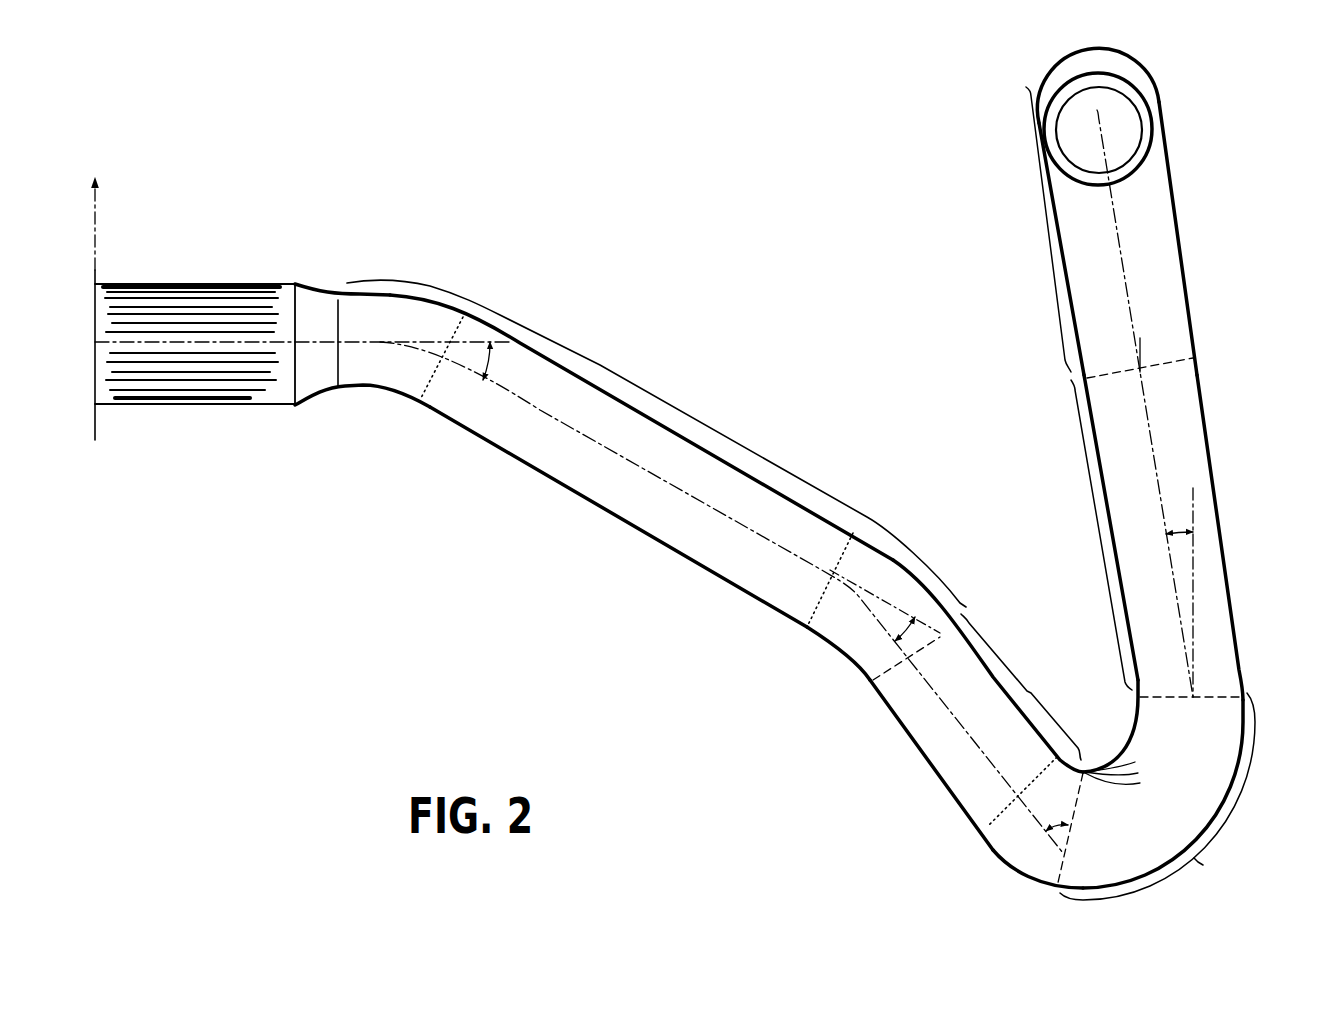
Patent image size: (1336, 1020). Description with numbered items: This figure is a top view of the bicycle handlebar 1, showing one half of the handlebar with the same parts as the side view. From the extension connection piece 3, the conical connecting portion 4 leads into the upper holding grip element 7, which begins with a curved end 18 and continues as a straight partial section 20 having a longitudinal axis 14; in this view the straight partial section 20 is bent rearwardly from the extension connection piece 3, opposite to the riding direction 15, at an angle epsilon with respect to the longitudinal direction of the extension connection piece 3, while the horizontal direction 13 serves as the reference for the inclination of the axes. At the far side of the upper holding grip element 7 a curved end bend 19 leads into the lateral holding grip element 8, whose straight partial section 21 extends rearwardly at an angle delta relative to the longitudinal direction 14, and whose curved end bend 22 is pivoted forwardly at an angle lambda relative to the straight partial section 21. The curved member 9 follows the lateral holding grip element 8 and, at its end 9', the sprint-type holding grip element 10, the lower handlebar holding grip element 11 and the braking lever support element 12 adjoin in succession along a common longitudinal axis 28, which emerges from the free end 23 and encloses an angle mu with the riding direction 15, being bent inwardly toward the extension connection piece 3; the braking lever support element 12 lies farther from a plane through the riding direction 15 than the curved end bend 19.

The bicycle handlebar 1 is at (811, 406).
The extension connection piece 3 is at (290, 277).
The connecting portion 4 is at (346, 283).
The upper holding grip element 7 is at (636, 383).
The lateral holding grip element 8 is at (1029, 693).
The curved member 9 is at (1157, 790).
The end of the curved member 9' is at (1226, 668).
The sprint-type holding grip element 10 is at (1101, 542).
The lower handlebar holding grip element 11 is at (1044, 251).
The braking lever support element 12 is at (1127, 47).
The horizontal direction 13 is at (420, 337).
The longitudinal axis of the straight partial section 14 is at (640, 463).
The riding direction 15 is at (97, 238).
The curved end 18 is at (383, 396).
The curved end bend 19 is at (837, 658).
The straight partial section 20 is at (550, 474).
The straight partial section 21 is at (923, 768).
The curved end bend 22 is at (1020, 871).
The free end 23 is at (1128, 140).
The longitudinal axis 28 is at (1140, 338).